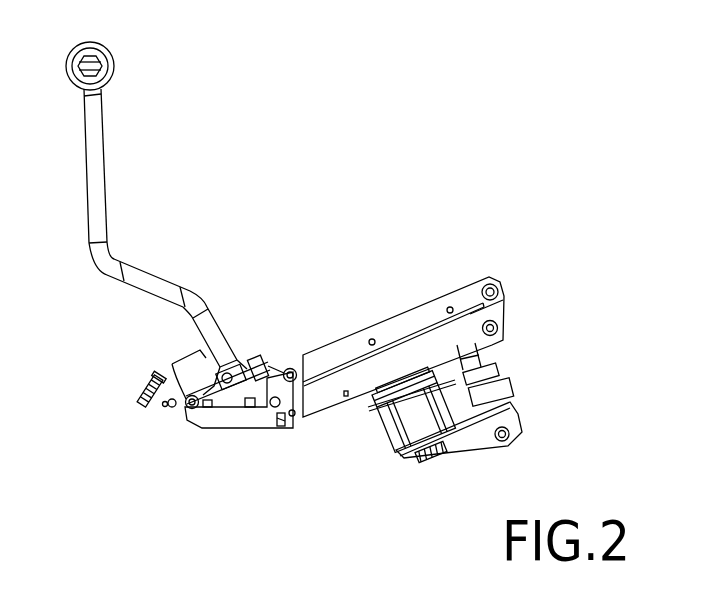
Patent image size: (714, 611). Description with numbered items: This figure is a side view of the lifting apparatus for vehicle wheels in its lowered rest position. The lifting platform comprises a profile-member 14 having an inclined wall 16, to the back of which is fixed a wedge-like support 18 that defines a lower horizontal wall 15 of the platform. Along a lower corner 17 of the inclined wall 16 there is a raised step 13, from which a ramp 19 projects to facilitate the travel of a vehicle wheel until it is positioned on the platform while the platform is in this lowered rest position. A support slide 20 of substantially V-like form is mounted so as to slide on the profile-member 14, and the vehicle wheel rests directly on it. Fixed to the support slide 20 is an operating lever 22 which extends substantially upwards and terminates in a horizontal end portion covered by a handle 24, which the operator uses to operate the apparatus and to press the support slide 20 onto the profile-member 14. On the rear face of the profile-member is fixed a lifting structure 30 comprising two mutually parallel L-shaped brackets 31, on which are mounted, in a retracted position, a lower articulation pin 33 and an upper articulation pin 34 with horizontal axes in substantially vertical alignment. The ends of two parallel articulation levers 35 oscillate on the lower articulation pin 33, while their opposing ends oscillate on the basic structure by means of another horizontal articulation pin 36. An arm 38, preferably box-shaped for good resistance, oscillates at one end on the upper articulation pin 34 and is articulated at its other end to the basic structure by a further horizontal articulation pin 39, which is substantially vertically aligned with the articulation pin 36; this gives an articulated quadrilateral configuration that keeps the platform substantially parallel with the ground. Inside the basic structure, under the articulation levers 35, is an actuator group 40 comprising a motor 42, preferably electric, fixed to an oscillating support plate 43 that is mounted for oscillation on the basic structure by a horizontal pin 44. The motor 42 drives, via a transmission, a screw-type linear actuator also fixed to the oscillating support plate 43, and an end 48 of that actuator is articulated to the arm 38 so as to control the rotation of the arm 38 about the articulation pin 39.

The raised step 13 is at (163, 405).
The profile-member 14 is at (210, 375).
The lower horizontal wall 15 is at (230, 408).
The inclined wall 16 is at (253, 362).
The lower corner 17 is at (190, 409).
The wedge-like support 18 is at (289, 362).
The ramp 19 is at (140, 389).
The support slide 20 is at (212, 376).
The operating lever 22 is at (100, 175).
The handle 24 is at (99, 72).
The lifting structure 30 is at (280, 390).
The L-shaped brackets 31 is at (310, 418).
The lower articulation pin 33 is at (293, 418).
The upper articulation pin 34 is at (322, 347).
The articulation levers 35 is at (363, 380).
The horizontal articulation pin 36 is at (500, 322).
The arm 38 is at (403, 333).
The horizontal articulation pin 39 is at (497, 283).
The actuator group 40 is at (504, 405).
The motor 42 is at (418, 420).
The oscillating support plate 43 is at (477, 440).
The horizontal pin 44 is at (511, 433).
The end of the actuator 48 is at (478, 363).